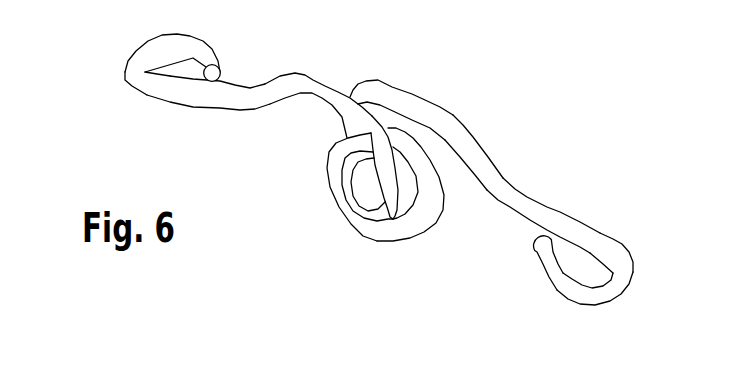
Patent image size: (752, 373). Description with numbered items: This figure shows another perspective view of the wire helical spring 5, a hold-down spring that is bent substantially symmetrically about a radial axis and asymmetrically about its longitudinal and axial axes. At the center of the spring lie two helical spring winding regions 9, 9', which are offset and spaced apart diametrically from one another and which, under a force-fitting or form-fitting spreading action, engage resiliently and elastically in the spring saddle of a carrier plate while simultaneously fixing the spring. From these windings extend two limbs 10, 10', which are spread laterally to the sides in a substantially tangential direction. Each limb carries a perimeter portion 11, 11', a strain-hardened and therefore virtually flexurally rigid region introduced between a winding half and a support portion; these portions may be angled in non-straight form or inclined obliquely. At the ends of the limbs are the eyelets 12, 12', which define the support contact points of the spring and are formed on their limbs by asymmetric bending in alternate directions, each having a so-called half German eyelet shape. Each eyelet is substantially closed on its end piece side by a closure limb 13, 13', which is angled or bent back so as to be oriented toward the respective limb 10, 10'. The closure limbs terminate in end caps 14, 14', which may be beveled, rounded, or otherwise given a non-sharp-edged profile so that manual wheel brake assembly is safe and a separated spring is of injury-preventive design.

The wire helical spring 5 is at (481, 130).
The helical spring winding region 9 is at (424, 184).
The helical spring winding region 9' is at (345, 178).
The limb 10 is at (401, 97).
The limb 10' is at (318, 110).
The perimeter portion 11 is at (543, 210).
The perimeter portion 11' is at (208, 117).
The eyelet 12 is at (626, 246).
The eyelet 12' is at (117, 89).
The closure limb 13 is at (527, 265).
The closure limb 13' is at (206, 55).
The end cap 14 is at (610, 306).
The end cap 14' is at (157, 42).